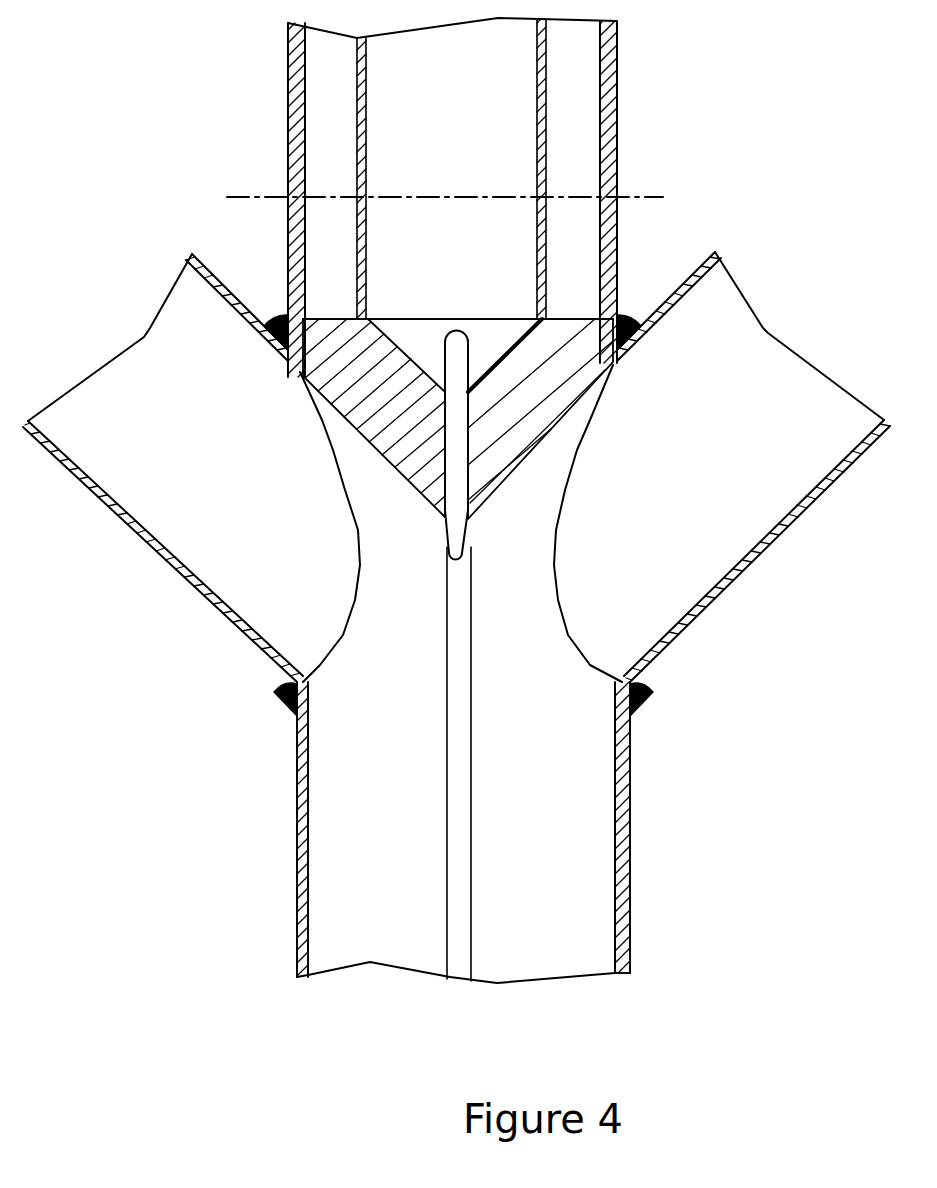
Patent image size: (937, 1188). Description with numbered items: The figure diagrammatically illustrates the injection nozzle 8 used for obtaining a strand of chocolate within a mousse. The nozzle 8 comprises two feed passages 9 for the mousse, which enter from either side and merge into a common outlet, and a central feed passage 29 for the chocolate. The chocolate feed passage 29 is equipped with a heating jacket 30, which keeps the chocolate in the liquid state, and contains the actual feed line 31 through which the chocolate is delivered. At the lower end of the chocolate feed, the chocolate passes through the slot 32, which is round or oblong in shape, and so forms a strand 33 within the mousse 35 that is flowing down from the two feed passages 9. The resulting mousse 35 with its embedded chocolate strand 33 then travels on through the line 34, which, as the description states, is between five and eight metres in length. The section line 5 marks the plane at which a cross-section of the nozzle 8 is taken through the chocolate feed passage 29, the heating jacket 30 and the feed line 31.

The section line V-V 5 is at (240, 168).
The injection nozzle 8 is at (255, 755).
The feed passages 9 is at (120, 523).
The feed passage 29 is at (621, 263).
The heating jacket 30 is at (339, 178).
The feed line 31 is at (458, 169).
The slot 32 is at (470, 553).
The strand 33 is at (472, 813).
The line 34 is at (627, 873).
The mousse 35 is at (357, 829).